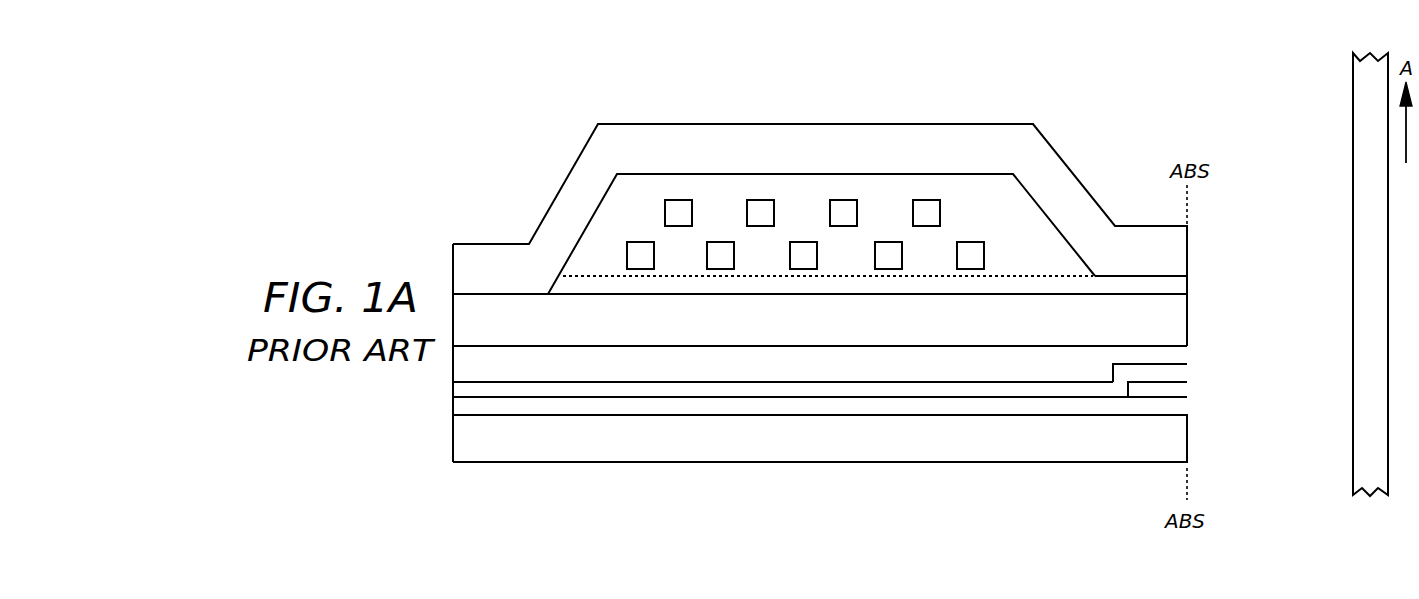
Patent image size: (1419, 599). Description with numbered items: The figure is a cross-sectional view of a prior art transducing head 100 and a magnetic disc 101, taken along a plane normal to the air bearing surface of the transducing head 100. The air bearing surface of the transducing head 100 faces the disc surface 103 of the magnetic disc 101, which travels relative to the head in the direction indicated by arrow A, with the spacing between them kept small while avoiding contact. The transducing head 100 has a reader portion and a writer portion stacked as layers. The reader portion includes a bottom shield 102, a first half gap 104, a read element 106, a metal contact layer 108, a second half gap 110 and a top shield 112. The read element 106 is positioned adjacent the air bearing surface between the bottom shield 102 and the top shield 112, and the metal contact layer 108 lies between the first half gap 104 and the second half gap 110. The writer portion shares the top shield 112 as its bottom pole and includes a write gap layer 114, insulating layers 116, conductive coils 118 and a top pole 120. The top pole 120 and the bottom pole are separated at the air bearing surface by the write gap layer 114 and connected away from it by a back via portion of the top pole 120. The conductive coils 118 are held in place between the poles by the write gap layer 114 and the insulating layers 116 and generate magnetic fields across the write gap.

The transducing head 100 is at (531, 158).
The magnetic disc 101 is at (1368, 132).
The bottom shield 102 is at (1175, 450).
The disc surface 103 is at (1353, 217).
The first half gap 104 is at (1163, 412).
The read element 106 is at (1165, 389).
The metal contact layer 108 is at (1162, 373).
The second half gap 110 is at (1102, 375).
The top shield 112 is at (1179, 328).
The write gap layer 114 is at (1160, 290).
The insulating layers 116 is at (1051, 263).
The conductive coils 118 is at (887, 258).
The top pole 120 is at (1179, 263).